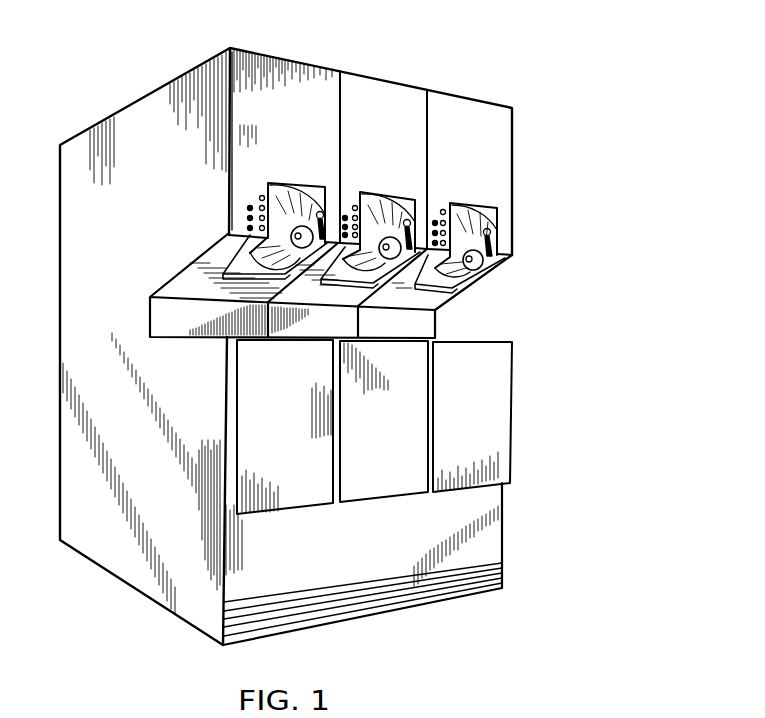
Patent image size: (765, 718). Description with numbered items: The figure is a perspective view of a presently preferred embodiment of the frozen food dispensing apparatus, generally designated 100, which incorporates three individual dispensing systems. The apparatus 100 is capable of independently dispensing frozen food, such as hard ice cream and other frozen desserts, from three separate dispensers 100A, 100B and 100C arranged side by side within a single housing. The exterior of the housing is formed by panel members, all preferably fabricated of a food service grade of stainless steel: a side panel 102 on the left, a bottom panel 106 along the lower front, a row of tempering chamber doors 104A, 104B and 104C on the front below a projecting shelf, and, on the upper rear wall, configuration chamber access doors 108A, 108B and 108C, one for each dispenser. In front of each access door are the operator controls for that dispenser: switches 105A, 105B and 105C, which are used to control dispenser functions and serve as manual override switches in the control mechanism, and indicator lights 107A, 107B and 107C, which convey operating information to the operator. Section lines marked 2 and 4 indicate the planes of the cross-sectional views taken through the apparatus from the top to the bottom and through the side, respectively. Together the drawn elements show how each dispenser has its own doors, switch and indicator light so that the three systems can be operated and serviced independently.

The frozen food dispensing apparatus 100 is at (580, 128).
The first dispenser 100A is at (312, 87).
The second dispenser 100B is at (383, 96).
The third dispenser 100C is at (464, 112).
The side panel 102 is at (154, 392).
The tempering chamber door 104A is at (300, 430).
The tempering chamber door 104B is at (405, 424).
The tempering chamber door 104C is at (492, 409).
The switch 105A is at (250, 205).
The switch 105B is at (345, 215).
The switch 105C is at (435, 220).
The bottom panel 106 is at (403, 551).
The indicator light 107A is at (261, 196).
The indicator light 107B is at (355, 206).
The indicator light 107C is at (443, 210).
The configuration chamber access door 108A is at (280, 117).
The configuration chamber access door 108B is at (405, 129).
The configuration chamber access door 108C is at (490, 139).
The section line 2- 2 is at (289, 655).
The section line 4- 4 is at (97, 572).